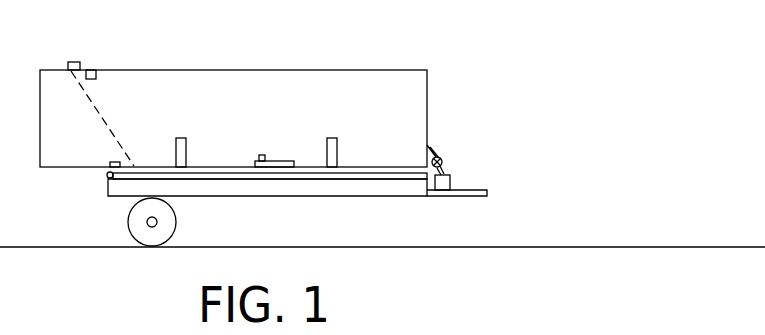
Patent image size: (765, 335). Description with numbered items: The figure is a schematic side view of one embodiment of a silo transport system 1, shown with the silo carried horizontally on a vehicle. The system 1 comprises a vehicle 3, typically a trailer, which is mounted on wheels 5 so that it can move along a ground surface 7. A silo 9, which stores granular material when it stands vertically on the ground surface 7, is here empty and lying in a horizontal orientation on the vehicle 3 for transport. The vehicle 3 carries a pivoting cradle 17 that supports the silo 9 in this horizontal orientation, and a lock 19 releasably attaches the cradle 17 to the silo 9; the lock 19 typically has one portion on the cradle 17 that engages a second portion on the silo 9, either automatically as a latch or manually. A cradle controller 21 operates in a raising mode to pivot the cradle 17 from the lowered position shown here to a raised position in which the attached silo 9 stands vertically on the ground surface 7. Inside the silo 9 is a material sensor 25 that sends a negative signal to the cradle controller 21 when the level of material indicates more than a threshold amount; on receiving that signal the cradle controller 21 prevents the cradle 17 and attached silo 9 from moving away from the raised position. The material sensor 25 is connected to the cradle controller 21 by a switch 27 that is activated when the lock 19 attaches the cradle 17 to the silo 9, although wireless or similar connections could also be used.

The silo transport system 1 is at (492, 58).
The vehicle 3 is at (388, 197).
The wheels 5 is at (178, 222).
The ground surface 7 is at (575, 247).
The silo 9 is at (290, 70).
The pivoting cradle 17 is at (313, 172).
The lock 19 is at (268, 160).
The cradle controller 21 is at (452, 180).
The material sensor 25 is at (90, 68).
The switch 27 is at (260, 154).